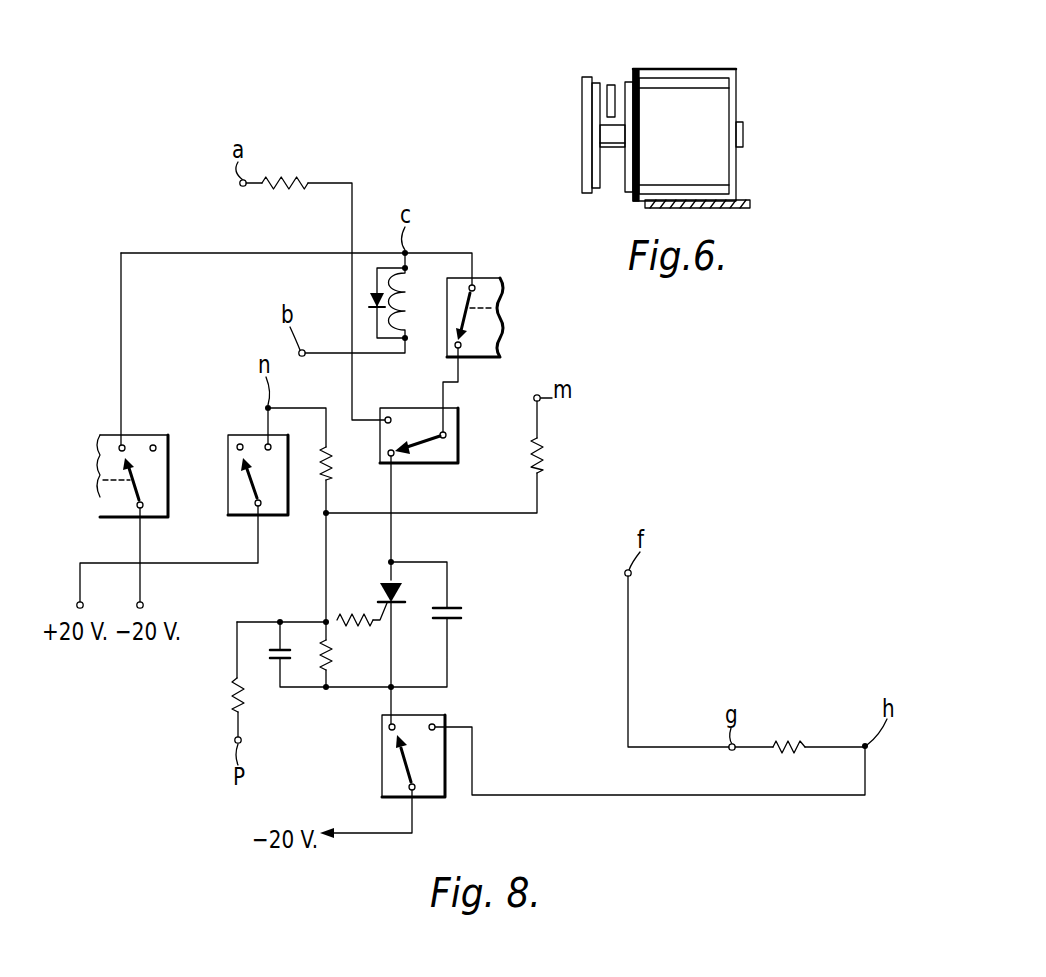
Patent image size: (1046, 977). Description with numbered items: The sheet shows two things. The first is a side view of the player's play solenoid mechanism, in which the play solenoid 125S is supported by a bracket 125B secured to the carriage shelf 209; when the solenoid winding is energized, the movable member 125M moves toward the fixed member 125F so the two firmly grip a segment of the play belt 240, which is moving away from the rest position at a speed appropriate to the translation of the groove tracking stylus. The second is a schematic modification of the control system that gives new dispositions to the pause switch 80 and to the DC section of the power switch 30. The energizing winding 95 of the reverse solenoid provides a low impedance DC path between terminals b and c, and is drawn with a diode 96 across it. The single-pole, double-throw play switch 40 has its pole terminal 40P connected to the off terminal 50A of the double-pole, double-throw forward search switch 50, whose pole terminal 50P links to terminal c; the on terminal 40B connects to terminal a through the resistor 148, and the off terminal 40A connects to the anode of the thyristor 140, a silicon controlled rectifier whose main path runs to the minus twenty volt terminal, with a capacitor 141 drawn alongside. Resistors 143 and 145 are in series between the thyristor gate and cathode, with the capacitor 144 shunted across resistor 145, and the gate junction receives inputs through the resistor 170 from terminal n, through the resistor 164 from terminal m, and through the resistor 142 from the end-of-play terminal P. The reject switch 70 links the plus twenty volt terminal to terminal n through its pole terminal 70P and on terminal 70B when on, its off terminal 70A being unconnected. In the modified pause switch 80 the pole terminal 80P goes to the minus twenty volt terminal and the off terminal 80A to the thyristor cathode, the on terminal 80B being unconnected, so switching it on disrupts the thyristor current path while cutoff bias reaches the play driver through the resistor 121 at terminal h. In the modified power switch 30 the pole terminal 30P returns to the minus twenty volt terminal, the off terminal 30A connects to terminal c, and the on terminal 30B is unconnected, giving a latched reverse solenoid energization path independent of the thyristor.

In FIG. 6, the play belt 240 is at (613, 83).
In FIG. 6, the bracket 125B is at (737, 72).
In FIG. 6, the play solenoid 125S is at (715, 107).
In FIG. 6, the movable member 125M is at (584, 175).
In FIG. 6, the fixed member 125F is at (627, 190).
In FIG. 6, the carriage shelf 209 is at (750, 205).
In FIG. 8, the resistor 148 is at (293, 174).
In FIG. 8, the diode 96 is at (368, 297).
In FIG. 8, the energizing winding 95 is at (400, 323).
In FIG. 8, the forward search switch 50 is at (499, 315).
In FIG. 8, the pole terminal 50P is at (475, 281).
In FIG. 8, the off terminal 50A is at (462, 352).
In FIG. 8, the play switch 40 is at (444, 433).
In FIG. 8, the on terminal 40B is at (390, 410).
In FIG. 8, the pole terminal 40P is at (460, 447).
In FIG. 8, the off terminal 40A is at (395, 458).
In FIG. 8, the resistor 164 is at (550, 450).
In FIG. 8, the resistor 170 is at (330, 470).
In FIG. 8, the power switch 30 is at (137, 455).
In FIG. 8, the off terminal 30A is at (122, 440).
In FIG. 8, the on terminal 30B is at (155, 443).
In FIG. 8, the pole terminal 30P is at (147, 503).
In FIG. 8, the reject switch 70 is at (261, 480).
In FIG. 8, the off terminal 70A is at (240, 442).
In FIG. 8, the on terminal 70B is at (273, 440).
In FIG. 8, the pole terminal 70P is at (263, 508).
In FIG. 8, the resistor 143 is at (343, 612).
In FIG. 8, the capacitor 141 is at (453, 607).
In FIG. 8, the thyristor 140 is at (400, 604).
In FIG. 8, the resistor 145 is at (333, 655).
In FIG. 8, the resistor 142 is at (230, 695).
In FIG. 8, the capacitor 144 is at (273, 662).
In FIG. 8, the pause switch 80 is at (415, 748).
In FIG. 8, the off terminal 80A is at (383, 723).
In FIG. 8, the on terminal 80B is at (437, 722).
In FIG. 8, the pole terminal 80P is at (403, 788).
In FIG. 8, the resistor 121 is at (788, 738).